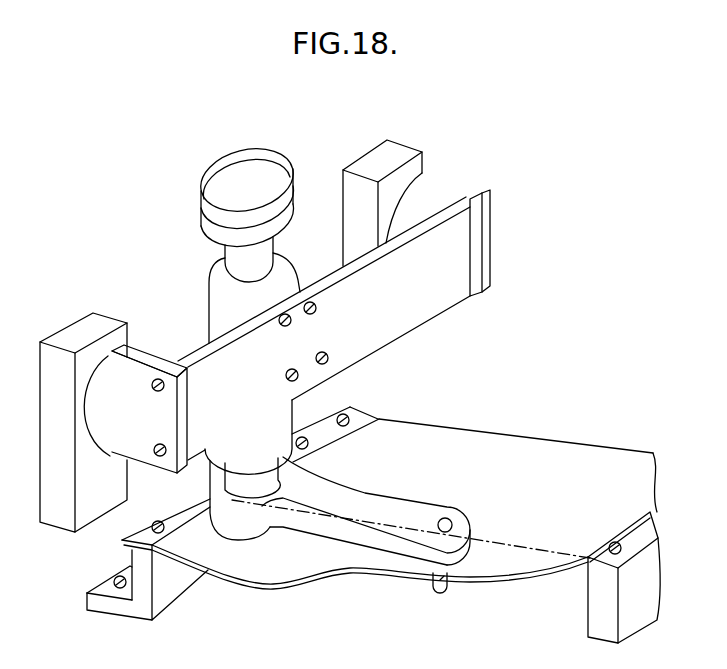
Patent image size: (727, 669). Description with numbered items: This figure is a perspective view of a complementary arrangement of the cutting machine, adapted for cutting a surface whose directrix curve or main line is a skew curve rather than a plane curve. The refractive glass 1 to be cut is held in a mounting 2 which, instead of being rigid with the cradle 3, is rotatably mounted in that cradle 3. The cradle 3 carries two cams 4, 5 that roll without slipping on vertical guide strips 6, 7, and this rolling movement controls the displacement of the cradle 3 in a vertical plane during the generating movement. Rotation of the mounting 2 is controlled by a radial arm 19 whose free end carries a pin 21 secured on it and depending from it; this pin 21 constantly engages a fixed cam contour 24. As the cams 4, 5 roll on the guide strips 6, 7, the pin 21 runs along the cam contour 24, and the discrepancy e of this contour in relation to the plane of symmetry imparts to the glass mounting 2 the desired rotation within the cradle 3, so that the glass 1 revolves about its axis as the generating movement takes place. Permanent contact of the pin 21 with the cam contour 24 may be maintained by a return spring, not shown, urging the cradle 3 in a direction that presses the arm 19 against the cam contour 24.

The refractive glass 1 is at (205, 202).
The mounting 2 is at (233, 262).
The cradle 3 is at (324, 328).
The cam 4 is at (488, 234).
The cam 5 is at (142, 370).
The guide strip 6 is at (368, 157).
The guide strip 7 is at (85, 318).
The radial arm 19 is at (403, 518).
The pin 21 is at (442, 597).
The cam contour 24 is at (528, 443).
The discrepancy e is at (487, 546).